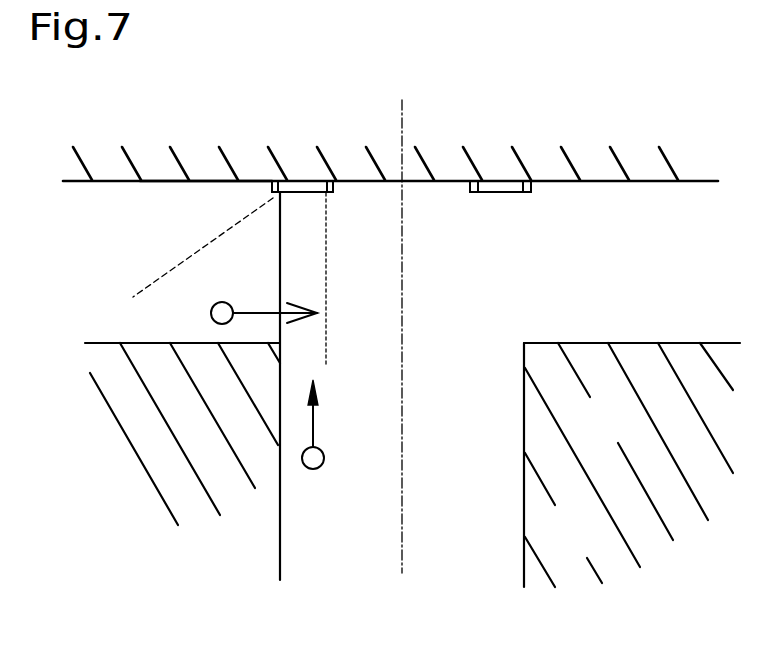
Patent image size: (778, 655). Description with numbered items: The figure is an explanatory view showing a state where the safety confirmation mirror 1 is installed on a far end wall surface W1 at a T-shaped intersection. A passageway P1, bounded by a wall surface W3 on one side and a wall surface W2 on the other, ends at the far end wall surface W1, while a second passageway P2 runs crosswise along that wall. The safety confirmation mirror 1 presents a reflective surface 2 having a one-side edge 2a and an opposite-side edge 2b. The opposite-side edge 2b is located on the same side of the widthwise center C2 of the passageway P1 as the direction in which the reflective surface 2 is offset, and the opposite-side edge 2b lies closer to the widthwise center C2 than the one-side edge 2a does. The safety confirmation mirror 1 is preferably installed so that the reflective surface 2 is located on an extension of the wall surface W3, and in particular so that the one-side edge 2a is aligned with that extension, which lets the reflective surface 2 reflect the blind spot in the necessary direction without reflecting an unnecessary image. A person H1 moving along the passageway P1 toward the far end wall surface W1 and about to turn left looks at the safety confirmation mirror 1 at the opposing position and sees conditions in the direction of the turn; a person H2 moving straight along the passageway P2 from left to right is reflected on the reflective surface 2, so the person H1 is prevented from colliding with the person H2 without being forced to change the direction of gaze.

The safety confirmation mirror 1 is at (330, 198).
The reflective surface 2 is at (500, 192).
The one-side edge 2a is at (273, 181).
The opposite-side edge 2b is at (333, 181).
The widthwise center C2 is at (403, 321).
The passageway P1 is at (503, 435).
The passageway P2 is at (602, 197).
The far end wall surface W1 is at (170, 183).
The wall surface W2 is at (524, 483).
The wall surface W3 is at (280, 483).
The person H1 is at (330, 428).
The person H2 is at (246, 314).